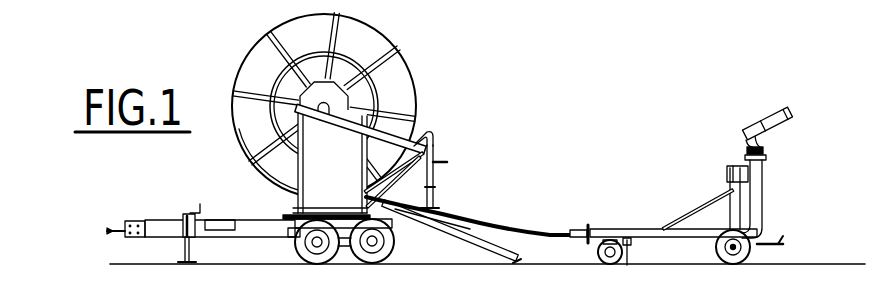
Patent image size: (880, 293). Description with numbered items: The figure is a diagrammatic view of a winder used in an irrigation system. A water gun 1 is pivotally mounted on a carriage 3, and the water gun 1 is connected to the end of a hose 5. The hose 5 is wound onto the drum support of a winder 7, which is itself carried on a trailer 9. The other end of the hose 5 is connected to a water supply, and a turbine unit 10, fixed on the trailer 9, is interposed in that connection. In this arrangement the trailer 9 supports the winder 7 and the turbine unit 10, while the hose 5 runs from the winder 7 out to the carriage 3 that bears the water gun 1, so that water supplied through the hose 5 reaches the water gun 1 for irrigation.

The water gun 1 is at (763, 109).
The carriage 3 is at (658, 224).
The hose 5 is at (501, 225).
The winder 7 is at (421, 90).
The trailer 9 is at (262, 231).
The turbine unit 10 is at (296, 180).